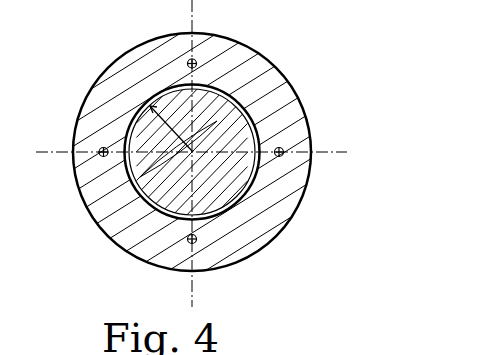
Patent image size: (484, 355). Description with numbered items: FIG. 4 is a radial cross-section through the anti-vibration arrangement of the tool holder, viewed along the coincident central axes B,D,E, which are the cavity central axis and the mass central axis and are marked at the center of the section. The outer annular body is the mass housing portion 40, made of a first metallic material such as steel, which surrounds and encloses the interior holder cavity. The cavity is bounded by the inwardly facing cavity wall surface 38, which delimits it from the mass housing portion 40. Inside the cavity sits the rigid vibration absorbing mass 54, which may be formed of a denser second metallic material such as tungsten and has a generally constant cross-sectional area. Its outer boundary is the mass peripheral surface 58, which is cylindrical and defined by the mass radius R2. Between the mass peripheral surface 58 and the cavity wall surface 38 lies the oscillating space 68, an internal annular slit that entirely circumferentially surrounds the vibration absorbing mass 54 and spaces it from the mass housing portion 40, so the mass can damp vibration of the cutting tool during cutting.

The mass housing portion 40 is at (289, 107).
The mass peripheral surface 58 is at (258, 180).
The cavity wall surface 38 is at (132, 133).
The vibration absorbing mass 54 is at (222, 180).
The oscillating space 68 is at (138, 95).
The mass radius R2 is at (97, 216).
The cavity central axis D and mass central axis E B,D,E is at (230, 97).